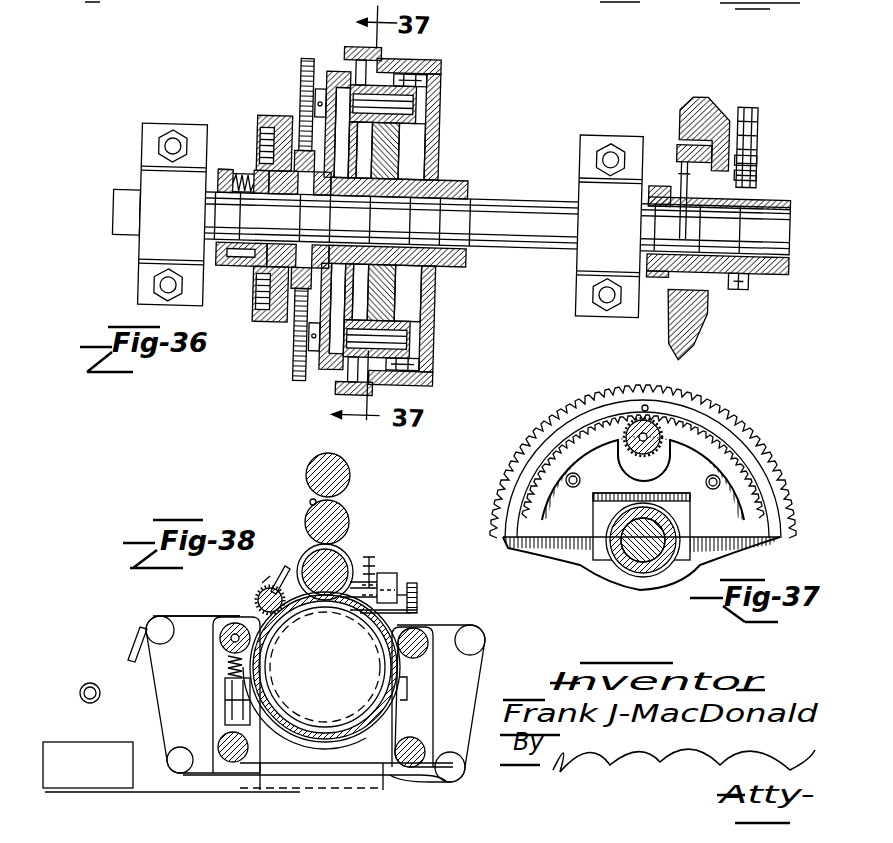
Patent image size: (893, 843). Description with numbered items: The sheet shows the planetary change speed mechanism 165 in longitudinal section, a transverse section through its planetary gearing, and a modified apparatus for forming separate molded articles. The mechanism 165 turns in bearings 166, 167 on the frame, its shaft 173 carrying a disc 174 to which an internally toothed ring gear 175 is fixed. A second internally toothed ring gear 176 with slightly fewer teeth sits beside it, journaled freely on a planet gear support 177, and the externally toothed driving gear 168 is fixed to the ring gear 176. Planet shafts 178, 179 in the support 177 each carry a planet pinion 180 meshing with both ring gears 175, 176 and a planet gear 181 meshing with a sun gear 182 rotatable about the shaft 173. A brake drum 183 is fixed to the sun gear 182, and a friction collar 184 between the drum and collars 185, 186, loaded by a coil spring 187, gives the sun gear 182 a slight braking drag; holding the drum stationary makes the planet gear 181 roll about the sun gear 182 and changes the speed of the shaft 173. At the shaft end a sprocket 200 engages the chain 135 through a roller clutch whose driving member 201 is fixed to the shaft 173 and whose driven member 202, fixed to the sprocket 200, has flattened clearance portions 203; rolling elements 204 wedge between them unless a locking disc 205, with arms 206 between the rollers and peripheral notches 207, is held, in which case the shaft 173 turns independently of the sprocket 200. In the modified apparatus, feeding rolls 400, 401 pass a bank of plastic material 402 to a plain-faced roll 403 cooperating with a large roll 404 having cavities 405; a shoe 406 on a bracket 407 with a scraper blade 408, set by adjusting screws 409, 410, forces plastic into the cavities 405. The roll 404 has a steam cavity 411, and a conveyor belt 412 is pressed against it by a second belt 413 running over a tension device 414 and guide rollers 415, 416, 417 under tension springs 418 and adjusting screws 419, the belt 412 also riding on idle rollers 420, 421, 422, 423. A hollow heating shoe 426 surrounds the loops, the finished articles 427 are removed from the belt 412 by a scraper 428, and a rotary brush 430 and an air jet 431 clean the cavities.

In FIG. 36, the chain 135 is at (756, 95).
In FIG. 36, the change speed mechanism 165 is at (424, 381).
In FIG. 36, the bearing 166 is at (150, 186).
In FIG. 36, the bearing 167 is at (603, 110).
In FIG. 36, the driving gear 168 is at (347, 389).
In FIG. 37, the driving gear 168 is at (590, 397).
In FIG. 36, the shaft 173 is at (532, 166).
In FIG. 37, the shaft 173 is at (667, 523).
In FIG. 36, the disc 174 is at (428, 127).
In FIG. 36, the internally toothed ring gear 175 is at (376, 52).
In FIG. 36, the second internally toothed ring gear 176 is at (328, 62).
In FIG. 37, the second internally toothed ring gear 176 is at (717, 437).
In FIG. 36, the planet gear support 177 is at (326, 76).
In FIG. 37, the planet gear support 177 is at (653, 468).
In FIG. 36, the planet shaft 178 is at (411, 95).
In FIG. 36, the planet shaft 179 is at (396, 330).
In FIG. 36, the planet pinion 180 is at (423, 56).
In FIG. 37, the planet pinion 180 is at (632, 452).
In FIG. 36, the planet gear 181 is at (297, 62).
In FIG. 36, the sun gear 182 is at (288, 153).
In FIG. 36, the brake drum 183 is at (264, 323).
In FIG. 36, the friction collar 184 is at (254, 266).
In FIG. 36, the collar 185 is at (248, 170).
In FIG. 36, the collar 186 is at (224, 168).
In FIG. 36, the coil spring 187 is at (232, 178).
In FIG. 36, the sprocket 200 is at (752, 263).
In FIG. 36, the driving member 201 is at (658, 262).
In FIG. 36, the driven member 202 is at (728, 268).
In FIG. 36, the flattened clearance portion 203 is at (756, 160).
In FIG. 36, the rolling element 204 is at (756, 143).
In FIG. 36, the locking disc 205 is at (700, 98).
In FIG. 36, the arm 206 is at (667, 154).
In FIG. 36, the peripheral notch 207 is at (676, 97).
In FIG. 38, the feeding roll 400 is at (350, 476).
In FIG. 38, the feeding roll 401 is at (342, 512).
In FIG. 38, the bank of plastic material 402 is at (310, 500).
In FIG. 38, the plain-faced roll 403 is at (337, 550).
In FIG. 38, the roll 404 is at (417, 613).
In FIG. 38, the cavity 405 is at (257, 603).
In FIG. 38, the shoe 406 is at (393, 573).
In FIG. 38, the bracket 407 is at (400, 583).
In FIG. 38, the scraper blade 408 is at (357, 614).
In FIG. 38, the adjusting screw 409 is at (377, 557).
In FIG. 38, the adjusting screw 410 is at (417, 588).
In FIG. 38, the steam cavity 411 is at (322, 712).
In FIG. 38, the conveyor belt 412 is at (483, 663).
In FIG. 38, the second belt 413 is at (433, 660).
In FIG. 38, the tension device 414 is at (220, 647).
In FIG. 38, the guide roller 415 is at (400, 658).
In FIG. 38, the guide roller 416 is at (415, 765).
In FIG. 38, the guide roller 417 is at (231, 763).
In FIG. 38, the tension spring 418 is at (230, 664).
In FIG. 38, the adjusting screw 419 is at (222, 720).
In FIG. 38, the idle roller 420 is at (485, 633).
In FIG. 38, the idle roller 421 is at (455, 770).
In FIG. 38, the idle roller 422 is at (183, 773).
In FIG. 38, the idle roller 423 is at (153, 622).
In FIG. 38, the hollow heating shoe 426 is at (350, 750).
In FIG. 38, the finished article 427 is at (227, 613).
In FIG. 38, the scraper 428 is at (128, 648).
In FIG. 38, the rotary brush 430 is at (270, 572).
In FIG. 38, the air jet 431 is at (283, 568).